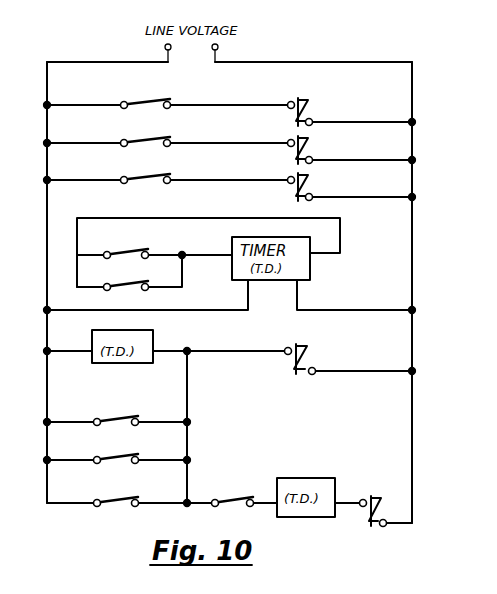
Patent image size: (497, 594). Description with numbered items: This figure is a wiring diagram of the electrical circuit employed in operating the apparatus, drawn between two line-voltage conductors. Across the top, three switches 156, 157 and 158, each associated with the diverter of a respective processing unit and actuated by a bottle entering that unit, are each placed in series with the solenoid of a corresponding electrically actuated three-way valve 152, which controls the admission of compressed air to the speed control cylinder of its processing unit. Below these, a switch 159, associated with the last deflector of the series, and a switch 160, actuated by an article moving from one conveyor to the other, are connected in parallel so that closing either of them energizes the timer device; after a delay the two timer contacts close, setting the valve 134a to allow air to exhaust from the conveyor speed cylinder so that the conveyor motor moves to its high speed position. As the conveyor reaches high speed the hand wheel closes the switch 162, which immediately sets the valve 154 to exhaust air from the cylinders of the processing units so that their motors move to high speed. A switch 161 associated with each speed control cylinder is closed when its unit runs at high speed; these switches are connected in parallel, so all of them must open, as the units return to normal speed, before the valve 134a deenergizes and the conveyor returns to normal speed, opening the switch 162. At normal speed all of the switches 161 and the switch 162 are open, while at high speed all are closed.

The switch 156 is at (146, 90).
The switch 157 is at (146, 129).
The switch 158 is at (146, 166).
The electrically actuated three-way valve 152 is at (321, 147).
The switch 159 is at (126, 241).
The switch 160 is at (126, 274).
The switch 161 is at (116, 448).
The valve 134a is at (331, 354).
The switch 162 is at (242, 468).
The electrically actuated three-way valve 154 is at (367, 486).